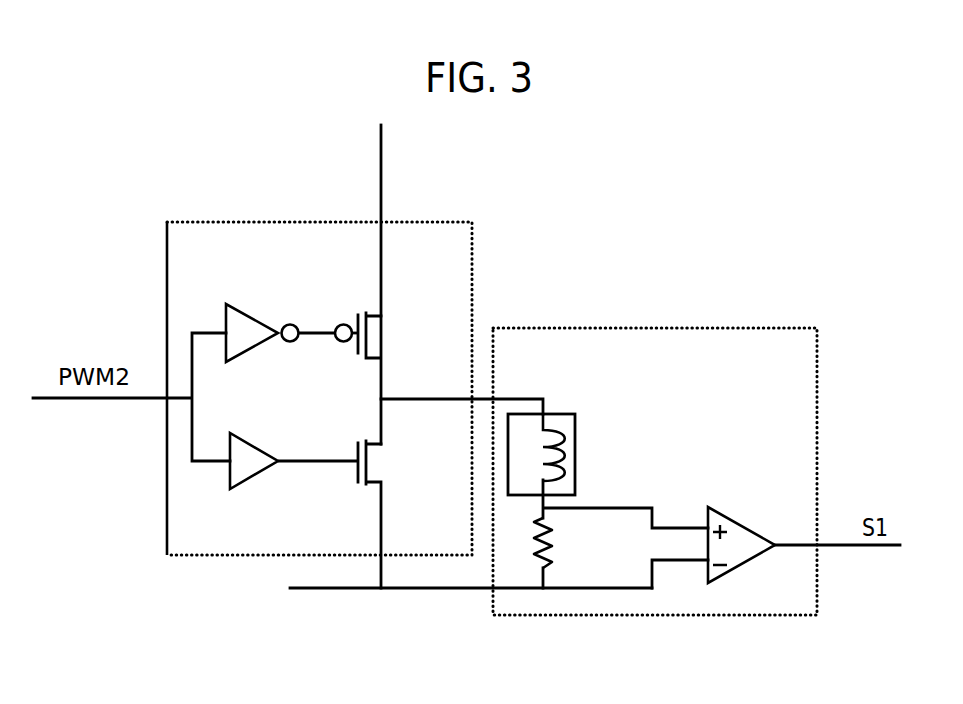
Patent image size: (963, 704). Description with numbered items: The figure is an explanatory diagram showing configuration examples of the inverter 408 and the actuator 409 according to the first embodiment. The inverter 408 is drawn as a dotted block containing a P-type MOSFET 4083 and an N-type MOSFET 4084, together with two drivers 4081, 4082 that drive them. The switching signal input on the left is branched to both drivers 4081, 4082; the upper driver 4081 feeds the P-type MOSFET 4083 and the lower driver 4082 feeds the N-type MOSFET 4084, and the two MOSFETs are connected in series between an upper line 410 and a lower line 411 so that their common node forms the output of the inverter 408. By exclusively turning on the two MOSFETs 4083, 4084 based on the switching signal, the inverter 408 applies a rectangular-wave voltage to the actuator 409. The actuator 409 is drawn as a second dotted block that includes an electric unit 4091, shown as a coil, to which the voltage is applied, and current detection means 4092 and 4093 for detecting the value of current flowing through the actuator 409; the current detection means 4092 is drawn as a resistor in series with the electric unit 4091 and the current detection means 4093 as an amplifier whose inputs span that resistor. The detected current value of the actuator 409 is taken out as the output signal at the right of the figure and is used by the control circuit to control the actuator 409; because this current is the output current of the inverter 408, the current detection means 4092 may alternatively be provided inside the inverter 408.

The inverter 408 is at (319, 353).
The driver 4081 is at (292, 303).
The driver 4082 is at (294, 431).
The P-type MOSFET 4083 is at (407, 357).
The N-type MOSFET 4084 is at (407, 498).
The actuator 409 is at (655, 439).
The electric unit 4091 is at (569, 420).
The current detection means 4092 is at (583, 551).
The current detection means 4093 is at (754, 517).
The power supply line 410 is at (412, 211).
The ground line 411 is at (471, 625).